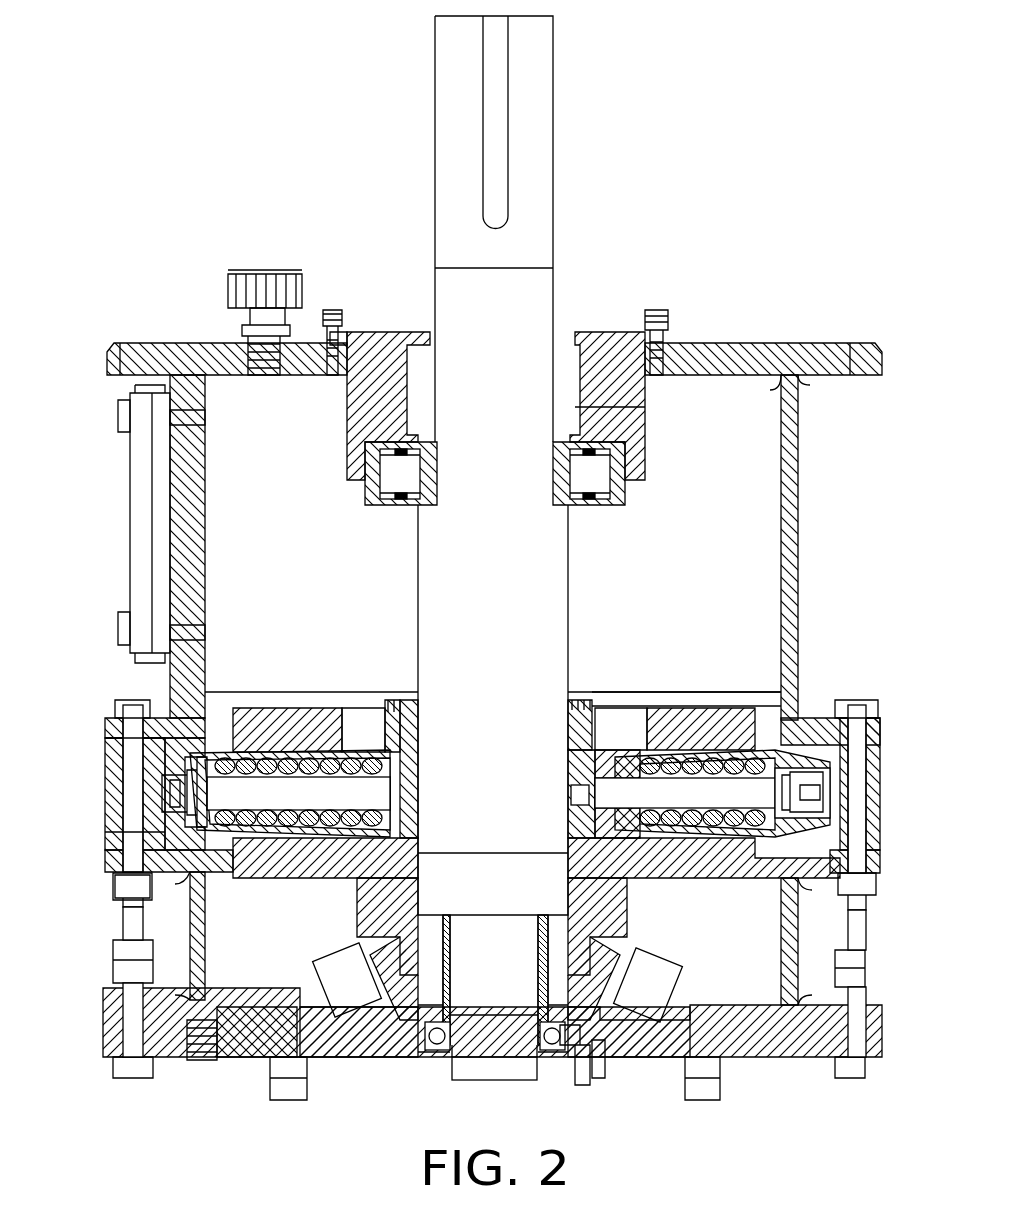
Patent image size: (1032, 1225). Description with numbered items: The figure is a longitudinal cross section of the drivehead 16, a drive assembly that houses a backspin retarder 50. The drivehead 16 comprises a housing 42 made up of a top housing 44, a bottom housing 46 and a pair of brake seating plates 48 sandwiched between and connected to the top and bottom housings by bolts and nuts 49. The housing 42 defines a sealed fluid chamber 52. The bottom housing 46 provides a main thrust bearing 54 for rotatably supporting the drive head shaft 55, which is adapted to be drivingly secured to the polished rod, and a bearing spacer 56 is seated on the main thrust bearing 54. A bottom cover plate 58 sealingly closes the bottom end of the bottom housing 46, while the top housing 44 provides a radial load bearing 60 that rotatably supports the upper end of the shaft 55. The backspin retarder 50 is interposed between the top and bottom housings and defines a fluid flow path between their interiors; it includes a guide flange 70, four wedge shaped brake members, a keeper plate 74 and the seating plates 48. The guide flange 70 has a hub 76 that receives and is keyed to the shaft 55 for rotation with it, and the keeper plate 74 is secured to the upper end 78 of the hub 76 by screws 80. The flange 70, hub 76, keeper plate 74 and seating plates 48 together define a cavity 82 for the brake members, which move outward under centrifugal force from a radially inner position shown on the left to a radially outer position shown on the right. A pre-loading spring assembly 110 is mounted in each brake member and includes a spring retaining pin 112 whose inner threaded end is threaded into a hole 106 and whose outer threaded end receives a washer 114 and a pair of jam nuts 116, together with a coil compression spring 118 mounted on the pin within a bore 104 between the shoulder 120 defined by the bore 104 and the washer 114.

The drivehead 16 is at (143, 232).
The housing 42 is at (706, 338).
The top housing 44 is at (800, 480).
The bottom housing 46 is at (190, 922).
The brake seating plates 48 is at (107, 790).
The bolts and nuts 49 is at (120, 705).
The backspin retarder 50 is at (660, 700).
The sealed fluid chamber 52 is at (718, 476).
The main thrust bearing 54 is at (700, 978).
The drive head shaft 55 is at (423, 565).
The bearing spacer 56 is at (357, 910).
The bottom cover plate 58 is at (250, 1035).
The radial load bearing 60 is at (365, 503).
The guide flange 70 is at (680, 858).
The keeper plate 74 is at (290, 720).
The hub 76 is at (440, 748).
The upper end of the hub 78 is at (396, 720).
The screws 80 is at (580, 700).
The cavity 82 is at (700, 748).
The bore 104 is at (110, 872).
The hole 106 is at (395, 808).
The pre-loading spring assembly 110 is at (238, 760).
The spring retaining pin 112 is at (862, 762).
The washer 114 is at (130, 760).
The jam nuts 116 is at (822, 790).
The coil compression spring 118 is at (740, 752).
The shoulder 120 is at (425, 845).